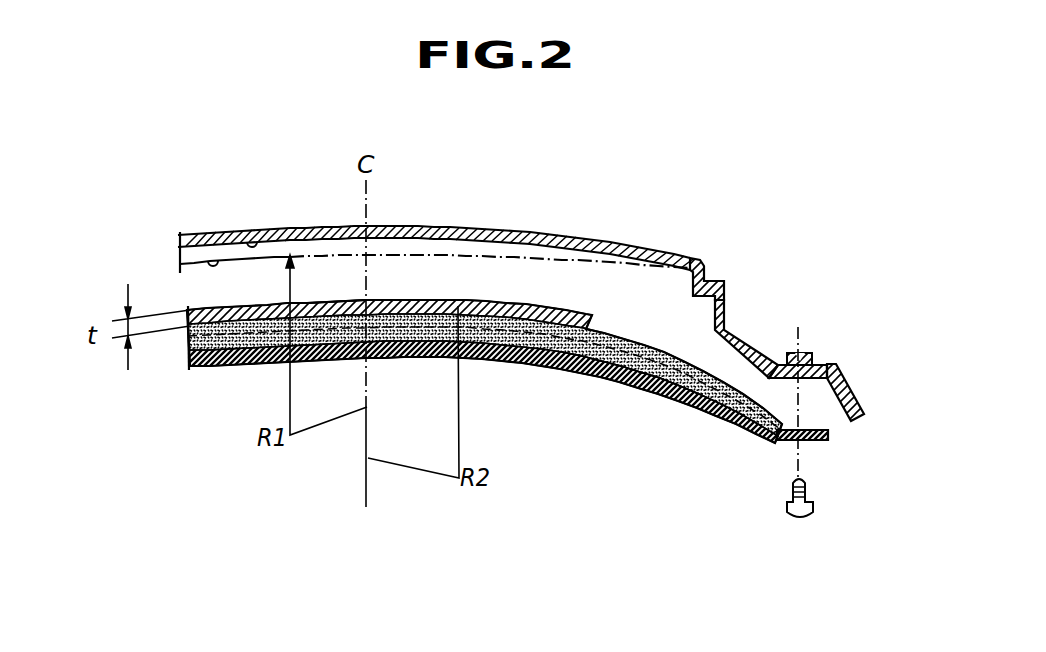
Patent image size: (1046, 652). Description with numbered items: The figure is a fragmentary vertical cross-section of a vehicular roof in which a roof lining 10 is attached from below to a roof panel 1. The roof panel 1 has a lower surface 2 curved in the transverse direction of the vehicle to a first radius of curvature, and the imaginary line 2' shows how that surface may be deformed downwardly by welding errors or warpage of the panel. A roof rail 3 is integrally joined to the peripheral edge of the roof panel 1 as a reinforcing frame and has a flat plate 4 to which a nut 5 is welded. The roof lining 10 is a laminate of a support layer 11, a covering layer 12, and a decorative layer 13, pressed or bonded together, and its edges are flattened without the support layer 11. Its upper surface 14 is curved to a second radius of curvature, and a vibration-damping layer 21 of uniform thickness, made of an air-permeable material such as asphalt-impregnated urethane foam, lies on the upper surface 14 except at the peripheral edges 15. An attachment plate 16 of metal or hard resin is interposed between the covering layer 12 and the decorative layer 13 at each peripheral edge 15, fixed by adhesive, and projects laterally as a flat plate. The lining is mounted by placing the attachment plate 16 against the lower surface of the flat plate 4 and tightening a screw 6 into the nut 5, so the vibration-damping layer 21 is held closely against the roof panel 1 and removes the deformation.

The roof panel 1 is at (441, 230).
The lower surface 2 is at (242, 210).
The imaginary line 2' is at (188, 219).
The vibration-damping layer 21 is at (323, 300).
The roof lining 10 is at (639, 328).
The covering layer 12 is at (528, 310).
The upper surface 14 is at (458, 306).
The support layer 11 is at (419, 360).
The decorative layer 13 is at (632, 373).
The roof rail 3 is at (738, 338).
The peripheral edge 15 is at (767, 400).
The nut 5 is at (806, 352).
The flat plate 4 is at (829, 362).
The attachment plate 16 is at (826, 441).
The screw 6 is at (798, 517).